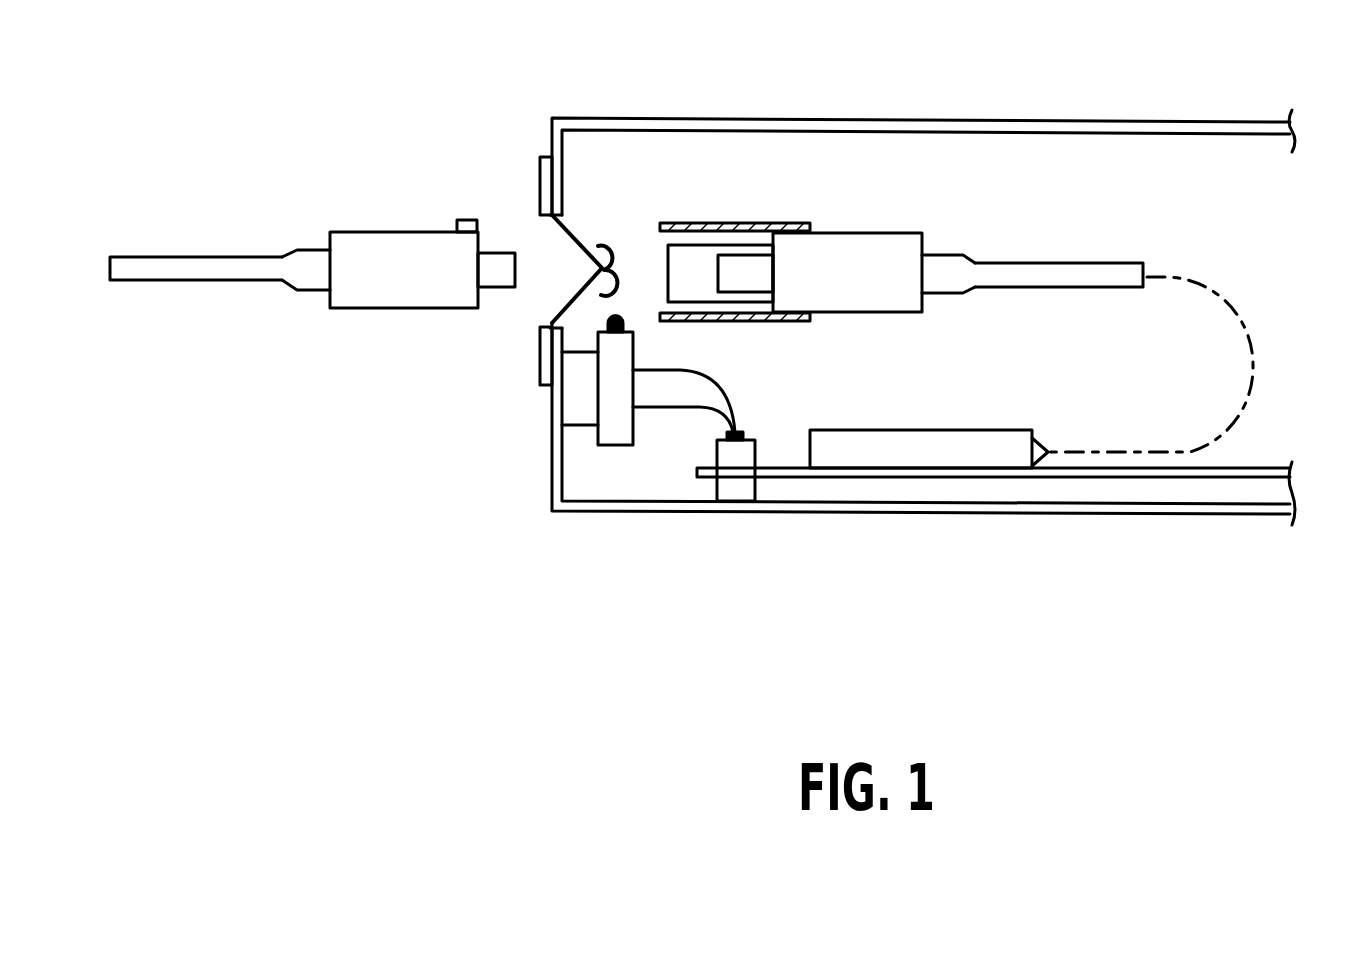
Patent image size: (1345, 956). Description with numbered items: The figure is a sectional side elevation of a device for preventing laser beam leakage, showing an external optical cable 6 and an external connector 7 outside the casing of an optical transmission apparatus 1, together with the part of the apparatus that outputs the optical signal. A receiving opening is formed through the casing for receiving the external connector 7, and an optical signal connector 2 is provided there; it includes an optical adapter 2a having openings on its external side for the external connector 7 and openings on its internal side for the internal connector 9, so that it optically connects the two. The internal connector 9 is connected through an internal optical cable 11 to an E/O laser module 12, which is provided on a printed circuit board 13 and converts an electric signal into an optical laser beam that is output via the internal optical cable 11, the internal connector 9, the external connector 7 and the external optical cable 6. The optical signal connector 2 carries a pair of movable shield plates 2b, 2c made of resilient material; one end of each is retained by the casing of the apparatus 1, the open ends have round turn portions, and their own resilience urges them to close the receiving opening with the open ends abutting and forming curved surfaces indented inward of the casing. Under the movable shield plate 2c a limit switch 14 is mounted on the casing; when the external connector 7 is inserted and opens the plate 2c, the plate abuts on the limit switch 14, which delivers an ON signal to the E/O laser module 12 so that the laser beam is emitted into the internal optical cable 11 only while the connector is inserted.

The optical transmission apparatus 1 is at (1097, 100).
The optical signal connector 2 is at (638, 151).
The optical adapter 2a is at (688, 222).
The movable shield plate 2b is at (572, 237).
The movable shield plate 2c is at (571, 300).
The external optical cable 6 is at (167, 263).
The external connector 7 is at (403, 243).
The internal connector 9 is at (878, 249).
The internal optical cable 11 is at (1076, 270).
The E/O laser module 12 is at (950, 447).
The printed circuit board 13 is at (1245, 474).
The limit switch 14 is at (614, 432).